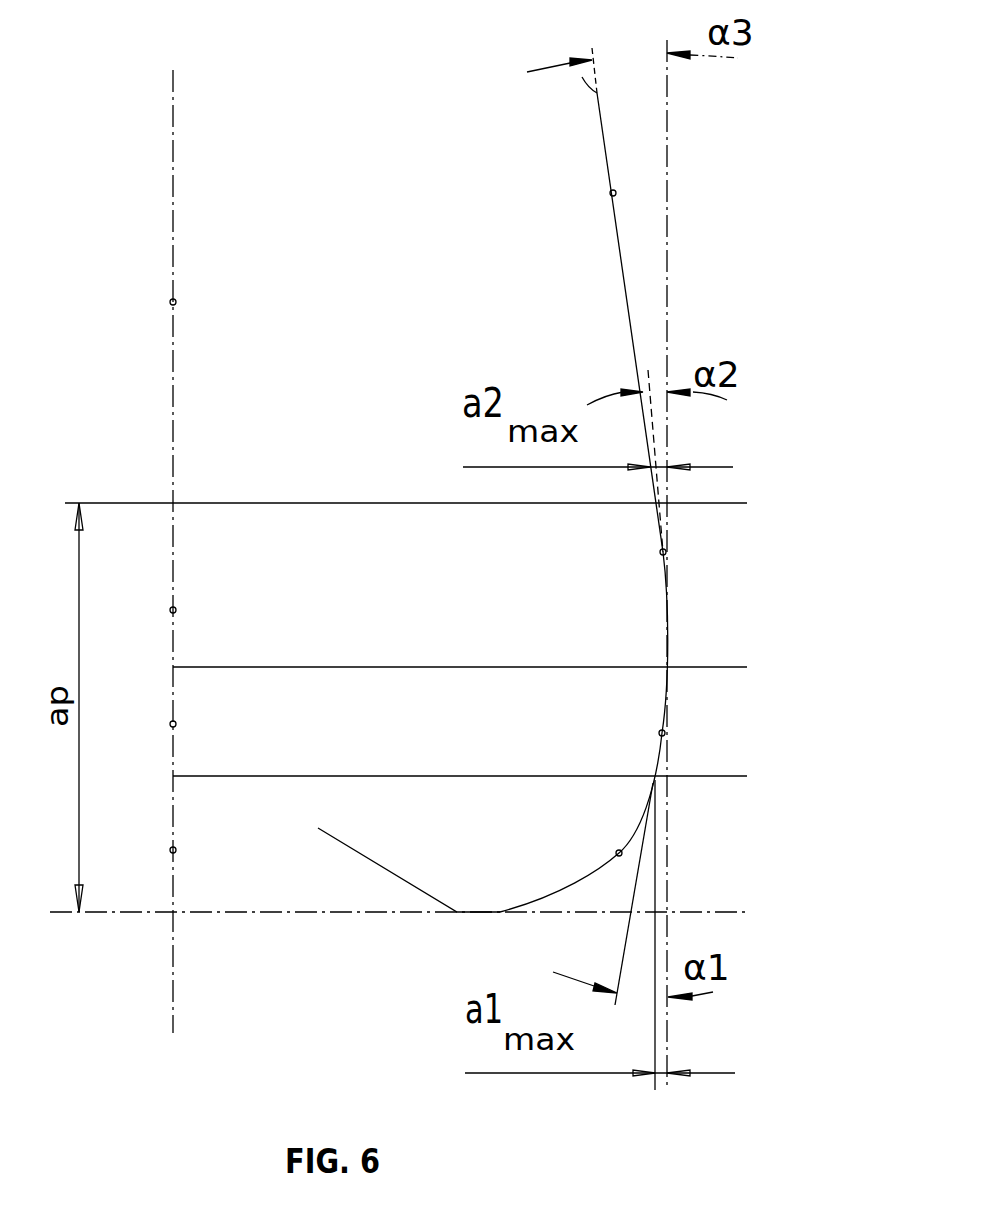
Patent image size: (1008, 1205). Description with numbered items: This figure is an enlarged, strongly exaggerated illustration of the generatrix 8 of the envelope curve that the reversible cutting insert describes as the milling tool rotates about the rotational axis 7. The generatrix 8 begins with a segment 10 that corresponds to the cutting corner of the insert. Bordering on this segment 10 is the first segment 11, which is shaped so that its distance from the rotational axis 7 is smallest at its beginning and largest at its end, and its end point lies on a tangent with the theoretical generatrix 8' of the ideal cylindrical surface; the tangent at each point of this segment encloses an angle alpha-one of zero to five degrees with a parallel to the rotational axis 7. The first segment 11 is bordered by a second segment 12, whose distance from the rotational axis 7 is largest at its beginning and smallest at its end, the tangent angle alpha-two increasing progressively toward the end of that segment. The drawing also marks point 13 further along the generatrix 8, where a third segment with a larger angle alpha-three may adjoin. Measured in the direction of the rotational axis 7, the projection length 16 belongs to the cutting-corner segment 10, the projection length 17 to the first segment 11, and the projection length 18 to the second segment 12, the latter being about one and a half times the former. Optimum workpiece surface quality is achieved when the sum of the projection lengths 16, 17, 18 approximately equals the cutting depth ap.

The rotational axis 7 is at (254, 551).
The generatrix 8 is at (704, 300).
The theoretical generatrix 8' is at (766, 565).
The segment 10 is at (619, 853).
The first segment 11 is at (662, 733).
The second segment 12 is at (663, 552).
The point on the cutting edge 13 is at (613, 193).
The projection length 16 is at (173, 850).
The projection length 17 is at (173, 724).
The projection length 18 is at (173, 610).